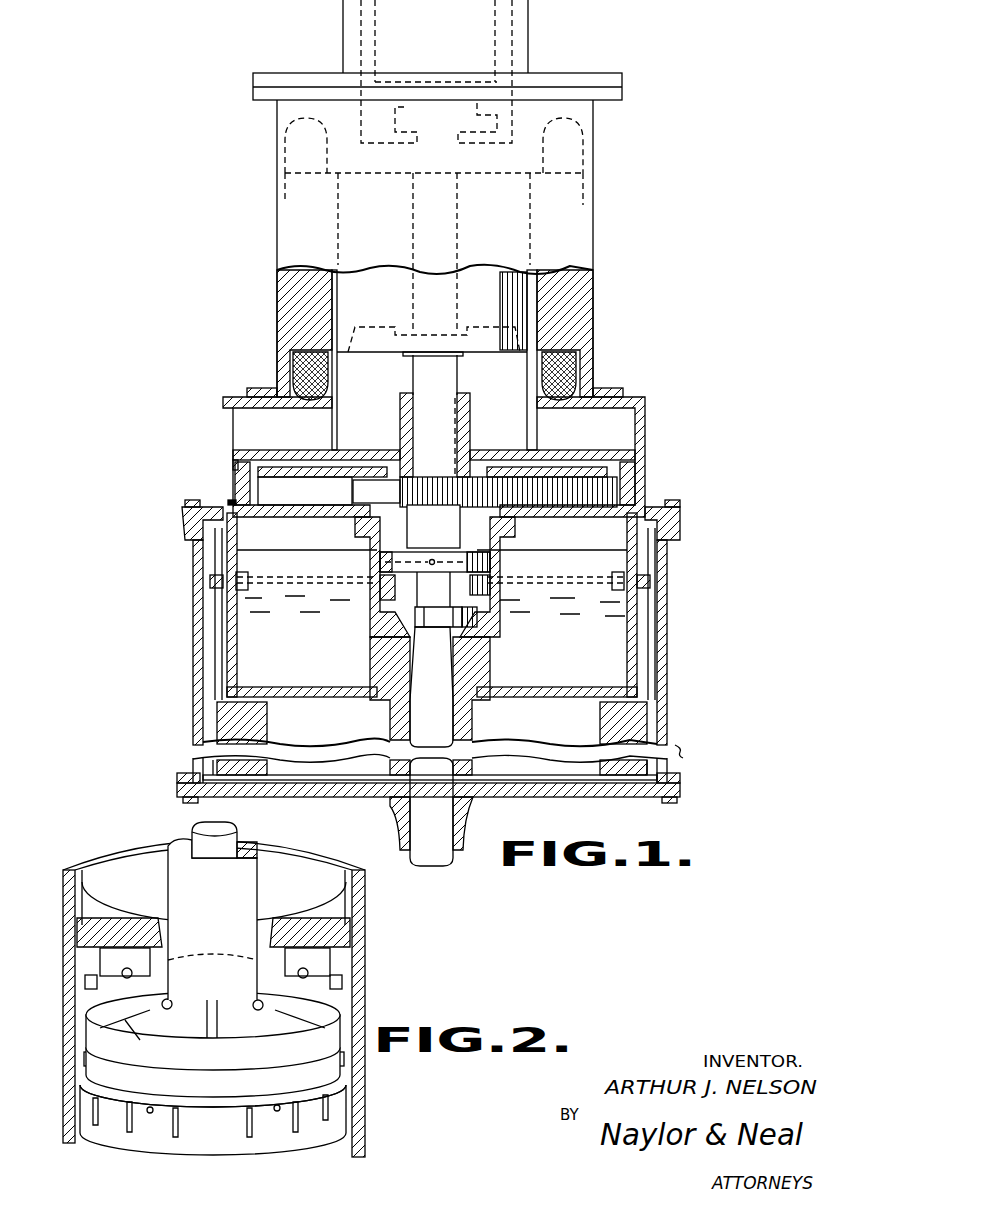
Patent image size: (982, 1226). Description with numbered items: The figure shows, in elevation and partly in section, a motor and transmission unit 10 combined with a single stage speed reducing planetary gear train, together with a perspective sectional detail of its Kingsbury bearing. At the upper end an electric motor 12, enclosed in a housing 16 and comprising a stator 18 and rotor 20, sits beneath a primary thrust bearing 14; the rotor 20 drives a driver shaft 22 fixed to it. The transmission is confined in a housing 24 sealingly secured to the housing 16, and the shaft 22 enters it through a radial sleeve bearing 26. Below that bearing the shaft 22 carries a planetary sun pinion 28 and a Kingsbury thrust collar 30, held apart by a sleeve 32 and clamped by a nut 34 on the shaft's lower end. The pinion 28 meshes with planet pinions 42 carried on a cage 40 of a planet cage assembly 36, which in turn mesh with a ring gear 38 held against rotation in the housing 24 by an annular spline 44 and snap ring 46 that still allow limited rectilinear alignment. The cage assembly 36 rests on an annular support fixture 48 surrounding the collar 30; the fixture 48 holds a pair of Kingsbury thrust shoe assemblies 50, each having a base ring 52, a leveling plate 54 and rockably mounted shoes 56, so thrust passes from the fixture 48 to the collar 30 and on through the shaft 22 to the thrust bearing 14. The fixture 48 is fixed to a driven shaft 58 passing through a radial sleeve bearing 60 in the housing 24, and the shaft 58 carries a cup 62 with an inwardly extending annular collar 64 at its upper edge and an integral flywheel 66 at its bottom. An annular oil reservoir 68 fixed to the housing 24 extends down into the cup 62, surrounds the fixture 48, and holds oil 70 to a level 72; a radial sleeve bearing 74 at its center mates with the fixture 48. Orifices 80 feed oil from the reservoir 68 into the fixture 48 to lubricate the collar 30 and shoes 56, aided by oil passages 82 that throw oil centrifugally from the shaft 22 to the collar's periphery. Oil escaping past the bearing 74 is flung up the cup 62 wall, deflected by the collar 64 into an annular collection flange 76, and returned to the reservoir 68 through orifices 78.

In FIG. 1, the motor and transmission unit 10 is at (268, 235).
In FIG. 1, the electric motor 12 is at (571, 210).
In FIG. 1, the primary thrust bearing 14 is at (500, 33).
In FIG. 1, the housing 16 is at (590, 330).
In FIG. 1, the stator 18 is at (575, 372).
In FIG. 1, the rotor 20 is at (398, 308).
In FIG. 1, the driver shaft 22 is at (455, 392).
In FIG. 2, the driver shaft 22 is at (195, 835).
In FIG. 1, the housing 24 is at (225, 477).
In FIG. 1, the radial sleeve bearing 26 is at (460, 428).
In FIG. 1, the planetary sun pinion 28 is at (432, 478).
In FIG. 1, the Kingsbury thrust collar 30 is at (488, 565).
In FIG. 2, the Kingsbury thrust collar 30 is at (355, 1040).
In FIG. 1, the sleeve 32 is at (444, 526).
In FIG. 2, the sleeve 32 is at (175, 868).
In FIG. 1, the nut 34 is at (496, 598).
In FIG. 1, the planet cage assembly 36 is at (576, 472).
In FIG. 1, the ring gear 38 is at (633, 487).
In FIG. 1, the cage 40 is at (297, 505).
In FIG. 1, the planet pinions 42 is at (568, 490).
In FIG. 1, the annular spline 44 is at (236, 459).
In FIG. 1, the snap ring 46 is at (230, 503).
In FIG. 1, the annular support fixture 48 is at (497, 580).
In FIG. 2, the annular support fixture 48 is at (360, 945).
In FIG. 2, the Kingsbury thrust shoe assemblies 50 is at (112, 876).
In FIG. 2, the base ring 52 is at (280, 910).
In FIG. 2, the leveling plate 54 is at (96, 958).
In FIG. 2, the shoes 56 is at (352, 1000).
In FIG. 1, the driven shaft 58 is at (404, 813).
In FIG. 1, the radial sleeve bearing 60 is at (462, 818).
In FIG. 1, the cup 62 is at (655, 615).
In FIG. 1, the annular collar 64 is at (658, 545).
In FIG. 1, the flywheel 66 is at (646, 722).
In FIG. 1, the oil reservoir 68 is at (627, 650).
In FIG. 1, the oil 70 is at (305, 636).
In FIG. 1, the level 72 is at (297, 582).
In FIG. 1, the radial sleeve bearing 74 is at (478, 668).
In FIG. 1, the annular collection flange 76 is at (645, 583).
In FIG. 1, the orifices 78 is at (620, 582).
In FIG. 1, the orifices 80 is at (490, 617).
In FIG. 1, the oil passages 82 is at (444, 549).